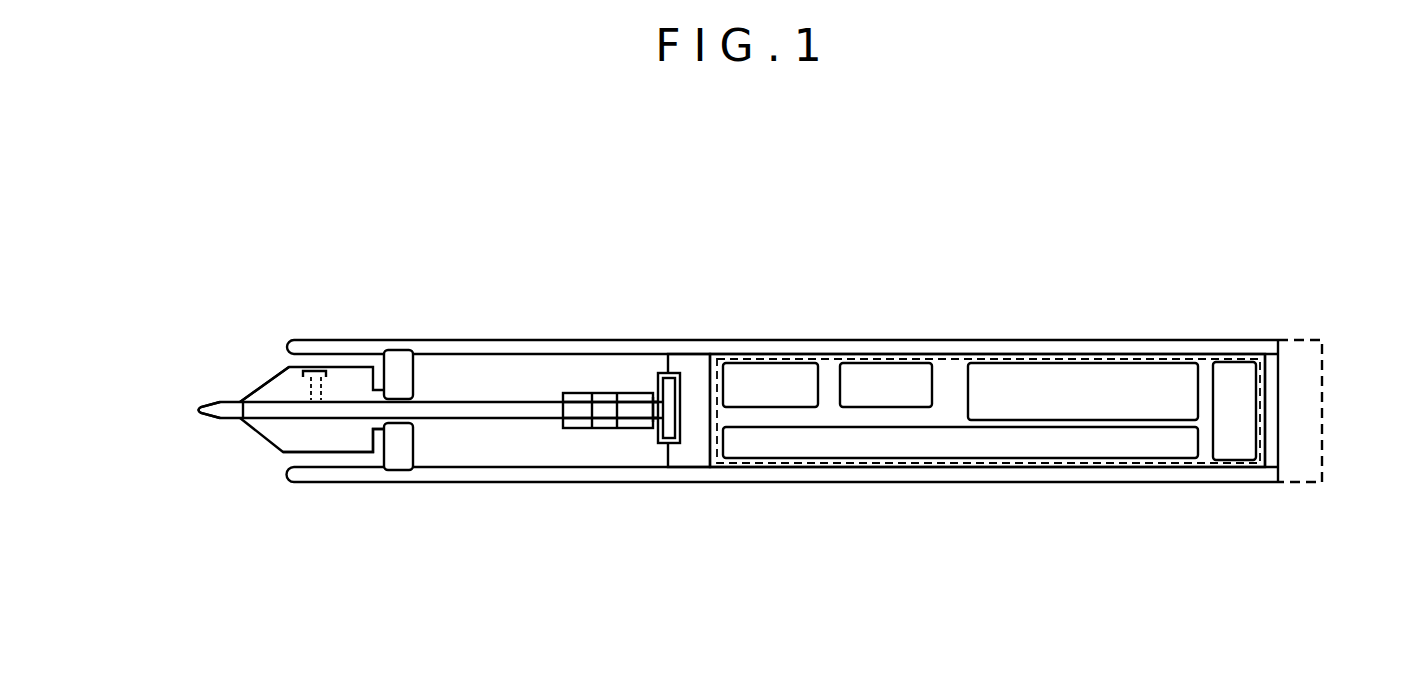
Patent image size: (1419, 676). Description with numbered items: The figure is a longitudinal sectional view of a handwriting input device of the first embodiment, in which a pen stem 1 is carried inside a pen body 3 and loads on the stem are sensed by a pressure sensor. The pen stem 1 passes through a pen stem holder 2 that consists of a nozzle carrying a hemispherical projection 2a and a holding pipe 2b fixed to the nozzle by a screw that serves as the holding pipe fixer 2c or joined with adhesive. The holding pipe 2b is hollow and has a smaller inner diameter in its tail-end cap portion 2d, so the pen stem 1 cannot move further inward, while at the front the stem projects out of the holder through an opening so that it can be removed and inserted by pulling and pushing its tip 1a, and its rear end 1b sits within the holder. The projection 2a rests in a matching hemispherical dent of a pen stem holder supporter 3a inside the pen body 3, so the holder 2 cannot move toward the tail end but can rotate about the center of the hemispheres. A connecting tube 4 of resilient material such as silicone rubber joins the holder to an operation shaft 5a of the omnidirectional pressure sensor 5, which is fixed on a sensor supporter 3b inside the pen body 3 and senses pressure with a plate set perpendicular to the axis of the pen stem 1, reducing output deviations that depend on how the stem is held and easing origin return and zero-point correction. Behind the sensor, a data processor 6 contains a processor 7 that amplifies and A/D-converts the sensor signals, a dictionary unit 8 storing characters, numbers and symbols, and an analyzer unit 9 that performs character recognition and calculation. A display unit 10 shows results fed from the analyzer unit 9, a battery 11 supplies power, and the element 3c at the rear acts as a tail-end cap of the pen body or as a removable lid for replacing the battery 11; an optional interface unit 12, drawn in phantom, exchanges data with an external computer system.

The pen stem 1 is at (262, 413).
The tip 1a is at (208, 417).
The needle rear end 1b is at (565, 412).
The pen stem holder 2 is at (282, 453).
The hemispherical projection 2a is at (390, 432).
The holding pipe 2b is at (253, 393).
The holding pipe fixer 2c is at (322, 372).
The tail-end cap portion 2d is at (600, 428).
The pen body 3 is at (530, 345).
The pen stem holder supporter 3a is at (402, 357).
The sensor supporter 3b is at (692, 357).
The tail-end cap 3c is at (1272, 388).
The connecting tube 4 is at (635, 430).
The omnidirectional pressure sensor 5 is at (665, 445).
The operation shaft 5a is at (632, 403).
The data processor 6 is at (793, 465).
The processor 7 is at (788, 370).
The dictionary unit 8 is at (892, 368).
The analyzer unit 9 is at (955, 455).
The display unit 10 is at (1075, 368).
The battery 11 is at (1238, 363).
The interface unit 12 is at (1322, 483).